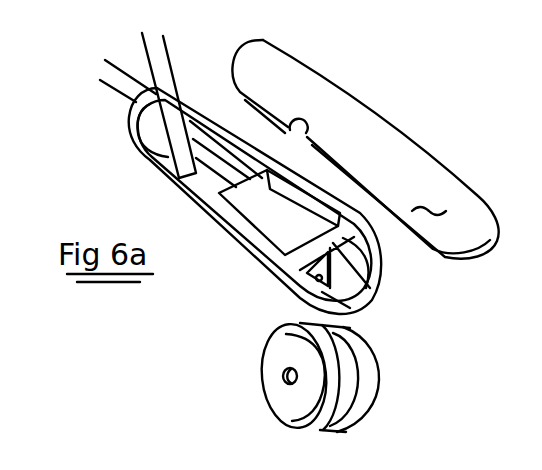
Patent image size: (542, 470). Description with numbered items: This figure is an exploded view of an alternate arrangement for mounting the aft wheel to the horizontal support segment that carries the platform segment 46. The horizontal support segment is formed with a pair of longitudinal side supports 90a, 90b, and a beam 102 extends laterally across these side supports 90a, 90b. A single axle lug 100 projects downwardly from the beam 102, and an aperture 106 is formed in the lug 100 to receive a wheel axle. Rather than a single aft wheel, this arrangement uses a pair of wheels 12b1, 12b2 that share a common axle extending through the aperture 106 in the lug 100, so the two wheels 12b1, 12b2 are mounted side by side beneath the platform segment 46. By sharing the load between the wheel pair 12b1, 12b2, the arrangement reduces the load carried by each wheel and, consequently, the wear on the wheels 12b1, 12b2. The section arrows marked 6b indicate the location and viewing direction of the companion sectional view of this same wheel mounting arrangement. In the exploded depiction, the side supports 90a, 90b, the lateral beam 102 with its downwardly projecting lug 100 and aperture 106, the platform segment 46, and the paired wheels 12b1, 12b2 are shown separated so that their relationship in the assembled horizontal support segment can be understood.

The longitudinal side support 90a is at (238, 236).
The longitudinal side support 90b is at (304, 187).
The platform segment 46 is at (458, 197).
The beam 102 is at (327, 233).
The axle lug 100 is at (331, 283).
The aperture 106 is at (350, 308).
The wheel 12b1 is at (297, 406).
The wheel 12b2 is at (360, 410).
The section view indicator 6b is at (363, 213).